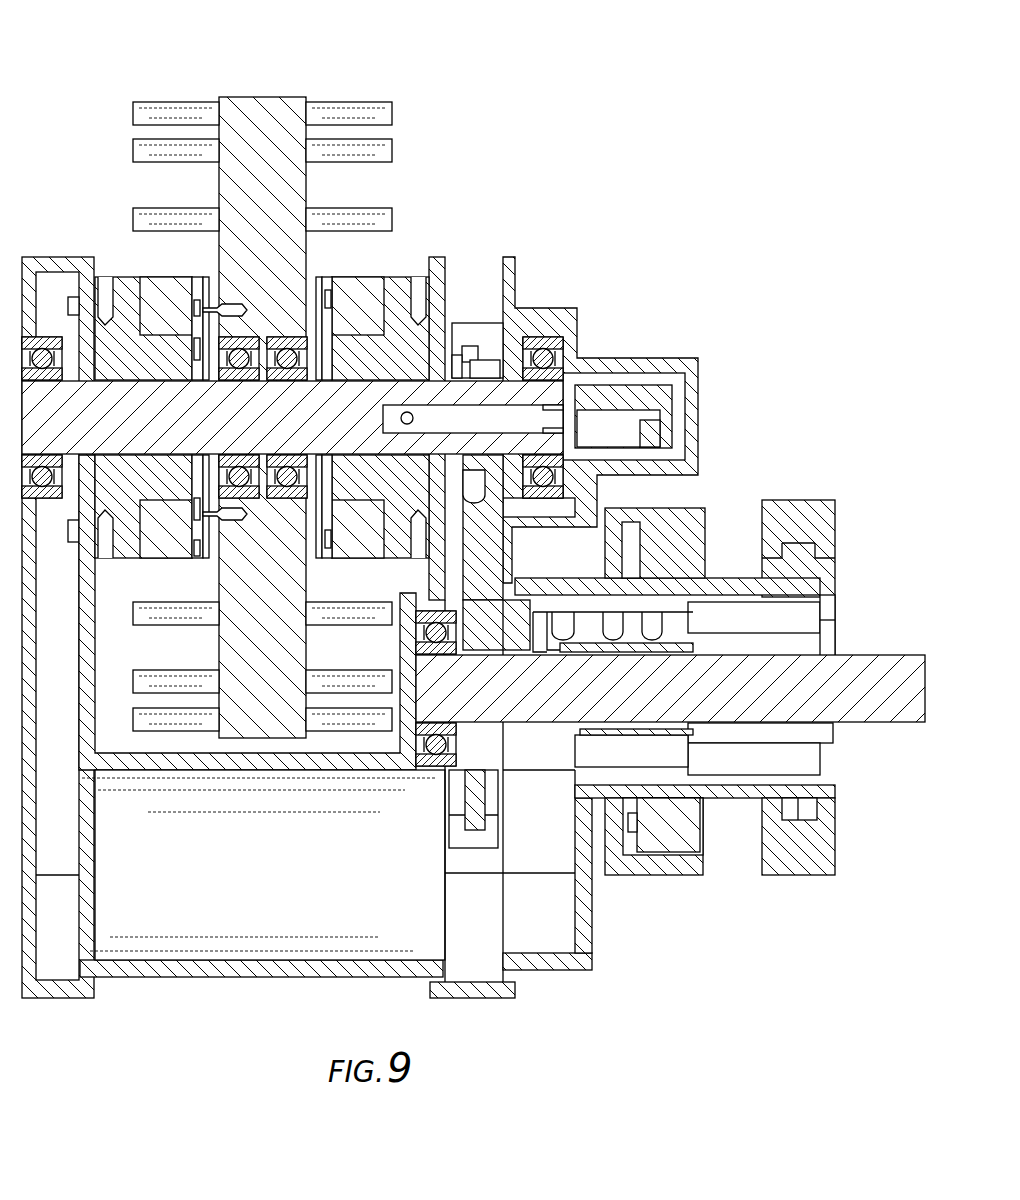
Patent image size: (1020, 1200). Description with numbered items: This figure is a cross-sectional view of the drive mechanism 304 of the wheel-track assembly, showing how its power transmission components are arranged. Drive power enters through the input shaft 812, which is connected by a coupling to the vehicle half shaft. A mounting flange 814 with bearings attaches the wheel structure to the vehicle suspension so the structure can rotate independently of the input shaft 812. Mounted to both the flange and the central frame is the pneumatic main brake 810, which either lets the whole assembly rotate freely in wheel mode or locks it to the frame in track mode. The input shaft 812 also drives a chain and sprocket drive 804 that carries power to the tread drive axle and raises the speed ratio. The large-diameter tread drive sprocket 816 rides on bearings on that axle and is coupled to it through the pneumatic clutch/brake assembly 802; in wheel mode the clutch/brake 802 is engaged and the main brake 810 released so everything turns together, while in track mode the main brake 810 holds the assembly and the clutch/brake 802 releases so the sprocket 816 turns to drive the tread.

The drive mechanism 304 is at (414, 42).
The pneumatic clutch/brake assembly 802 is at (135, 320).
The chain and sprocket drive 804 is at (475, 353).
The main brake 810 is at (733, 858).
The input shaft 812 is at (883, 672).
The mounting flange 814 is at (800, 520).
The tread drive sprocket 816 is at (233, 186).